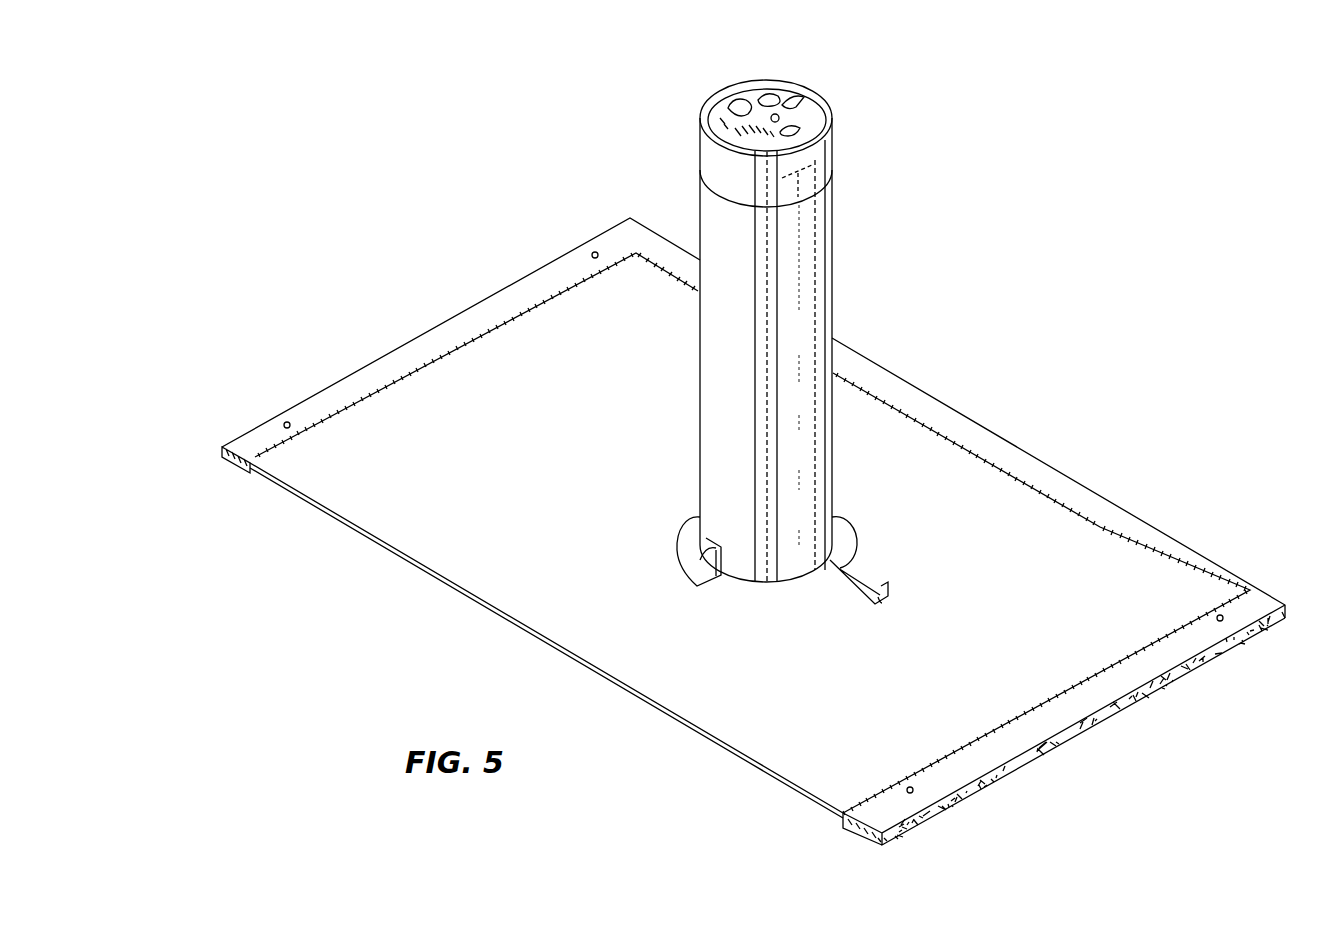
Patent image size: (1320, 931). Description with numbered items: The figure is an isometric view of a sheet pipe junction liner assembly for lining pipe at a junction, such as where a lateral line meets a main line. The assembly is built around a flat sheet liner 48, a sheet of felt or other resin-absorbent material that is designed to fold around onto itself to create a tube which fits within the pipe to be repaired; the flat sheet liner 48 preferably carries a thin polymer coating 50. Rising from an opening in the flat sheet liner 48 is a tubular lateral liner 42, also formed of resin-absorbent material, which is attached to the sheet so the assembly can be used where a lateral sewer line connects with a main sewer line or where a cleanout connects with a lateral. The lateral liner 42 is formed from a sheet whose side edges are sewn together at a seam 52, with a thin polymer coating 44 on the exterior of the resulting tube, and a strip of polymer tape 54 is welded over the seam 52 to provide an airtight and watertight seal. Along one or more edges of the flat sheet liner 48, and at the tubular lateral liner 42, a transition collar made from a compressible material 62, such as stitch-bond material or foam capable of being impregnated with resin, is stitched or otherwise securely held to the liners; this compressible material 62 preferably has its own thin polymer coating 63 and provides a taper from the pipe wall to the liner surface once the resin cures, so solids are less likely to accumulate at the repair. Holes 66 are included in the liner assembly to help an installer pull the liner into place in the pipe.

The tubular lateral liner 42 is at (777, 137).
The polymer coating 44 is at (817, 290).
The flat sheet liner 48 is at (806, 794).
The polymer coating 50 is at (1040, 535).
The seam 52 is at (840, 130).
The strip of polymer tape 54 is at (688, 540).
The compressible material 62 is at (222, 447).
The polymer coating 63 is at (477, 327).
The holes 66 is at (598, 257).